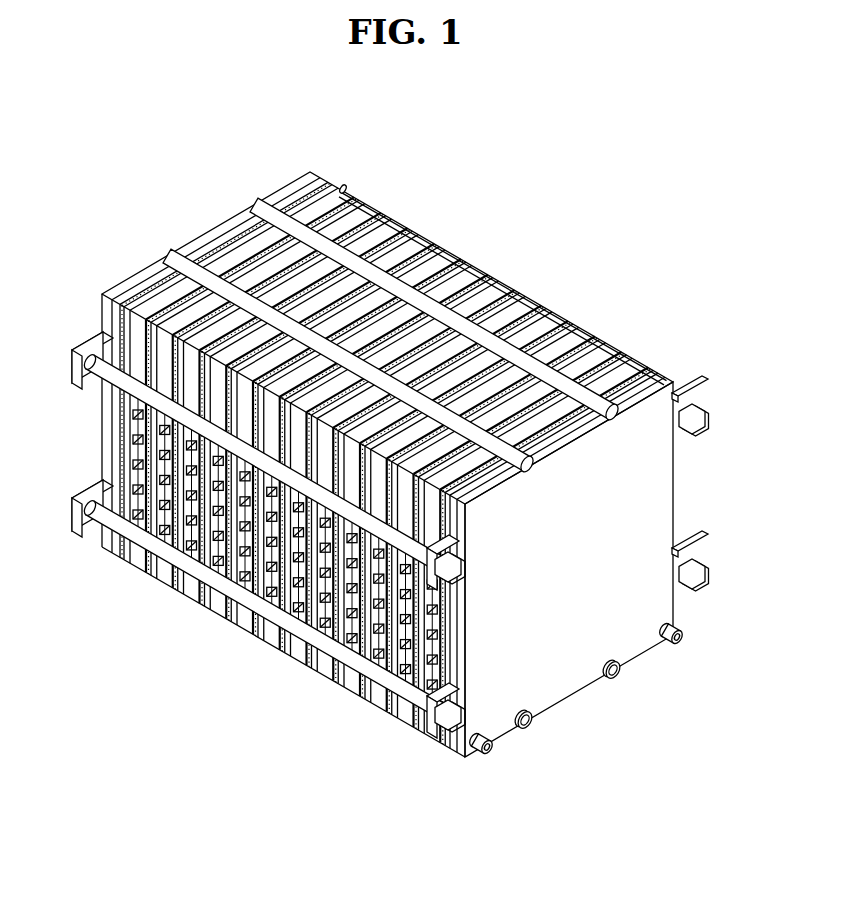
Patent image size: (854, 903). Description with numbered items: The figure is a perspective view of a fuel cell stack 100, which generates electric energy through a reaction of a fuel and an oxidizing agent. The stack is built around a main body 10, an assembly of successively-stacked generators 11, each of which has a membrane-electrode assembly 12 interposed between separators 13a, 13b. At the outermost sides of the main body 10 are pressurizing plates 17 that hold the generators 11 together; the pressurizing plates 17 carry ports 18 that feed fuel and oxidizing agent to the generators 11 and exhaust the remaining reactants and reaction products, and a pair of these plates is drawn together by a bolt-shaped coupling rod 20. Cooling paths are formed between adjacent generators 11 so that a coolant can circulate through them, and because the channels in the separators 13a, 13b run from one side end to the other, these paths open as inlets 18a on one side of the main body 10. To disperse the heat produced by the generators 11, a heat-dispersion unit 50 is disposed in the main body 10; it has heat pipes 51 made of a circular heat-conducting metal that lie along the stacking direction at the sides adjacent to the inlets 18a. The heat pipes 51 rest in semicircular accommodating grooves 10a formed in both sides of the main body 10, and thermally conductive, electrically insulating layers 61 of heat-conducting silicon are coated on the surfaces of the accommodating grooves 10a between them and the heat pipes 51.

The fuel cell stack 100 is at (379, 126).
The main body 10 is at (603, 324).
The accommodating grooves 10a is at (510, 336).
The generators 11 is at (62, 616).
The membrane-electrode assembly 12 is at (143, 574).
The separator 13a is at (137, 562).
The separator 13b is at (158, 574).
The pressurizing plates 17 is at (240, 232).
The ports 18 is at (240, 571).
The inlets 18a is at (303, 630).
The coupling rod 20 is at (97, 376).
The heat-dispersion unit 50 is at (160, 246).
The heat pipe 51 is at (172, 250).
The insulating layers 61 is at (383, 258).